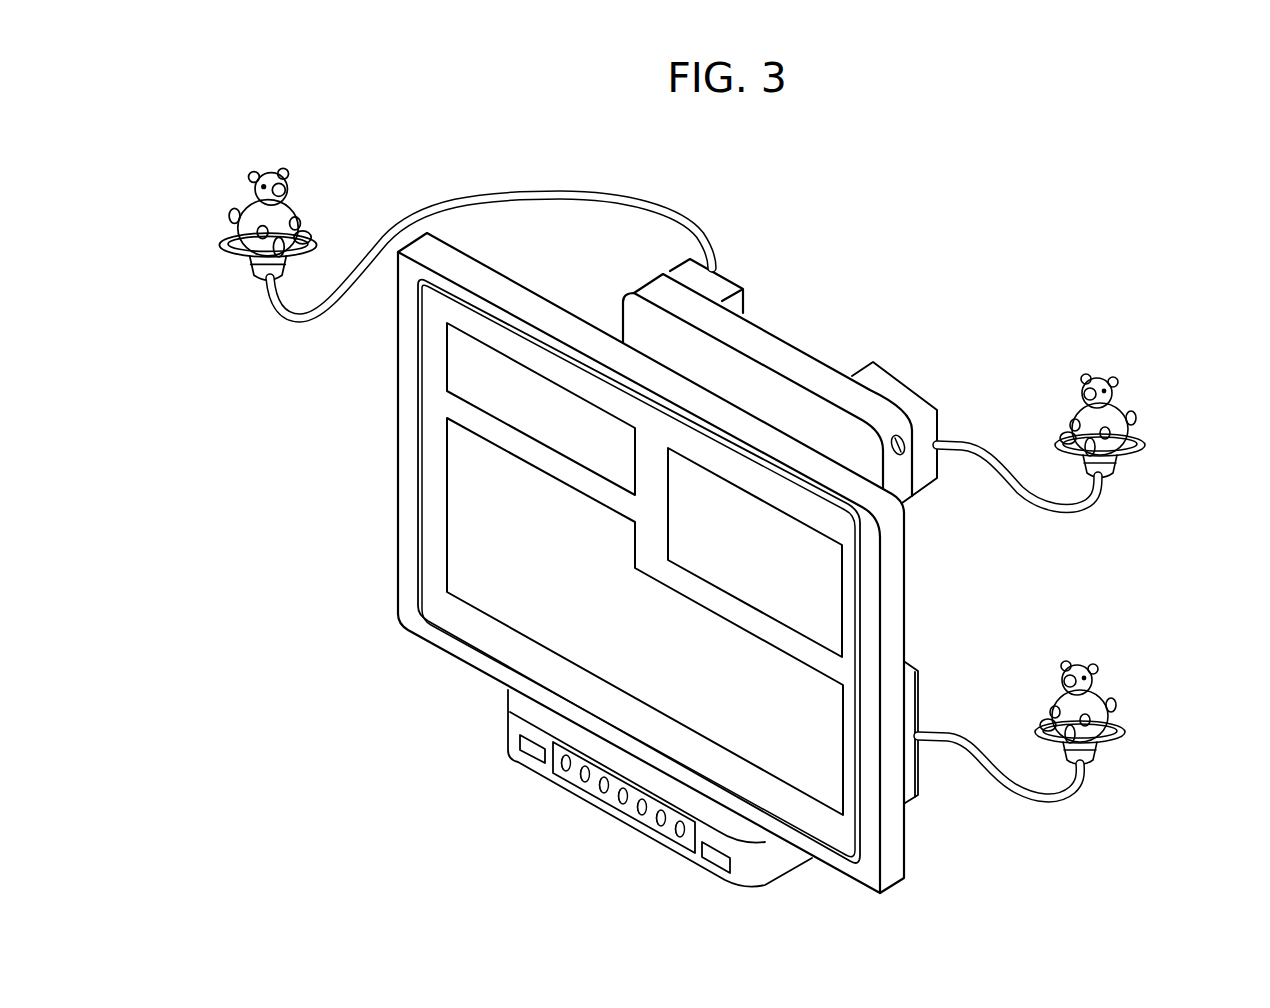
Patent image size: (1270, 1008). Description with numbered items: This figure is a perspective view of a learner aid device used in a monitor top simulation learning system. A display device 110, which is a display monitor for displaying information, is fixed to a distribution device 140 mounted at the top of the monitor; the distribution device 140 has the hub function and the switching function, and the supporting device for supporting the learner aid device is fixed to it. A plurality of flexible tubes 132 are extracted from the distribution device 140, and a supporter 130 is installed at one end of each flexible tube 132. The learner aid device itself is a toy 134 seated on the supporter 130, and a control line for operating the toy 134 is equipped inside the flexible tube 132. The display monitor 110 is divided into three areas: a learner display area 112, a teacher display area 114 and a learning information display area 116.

The display device 110 is at (398, 488).
The learner display area 112 is at (562, 422).
The teacher display area 114 is at (778, 563).
The learning information display area 116 is at (604, 598).
The supporter 130 is at (1121, 461).
The flexible tube 132 is at (1000, 486).
The toy 134 is at (1123, 403).
The distribution device 140 is at (810, 374).